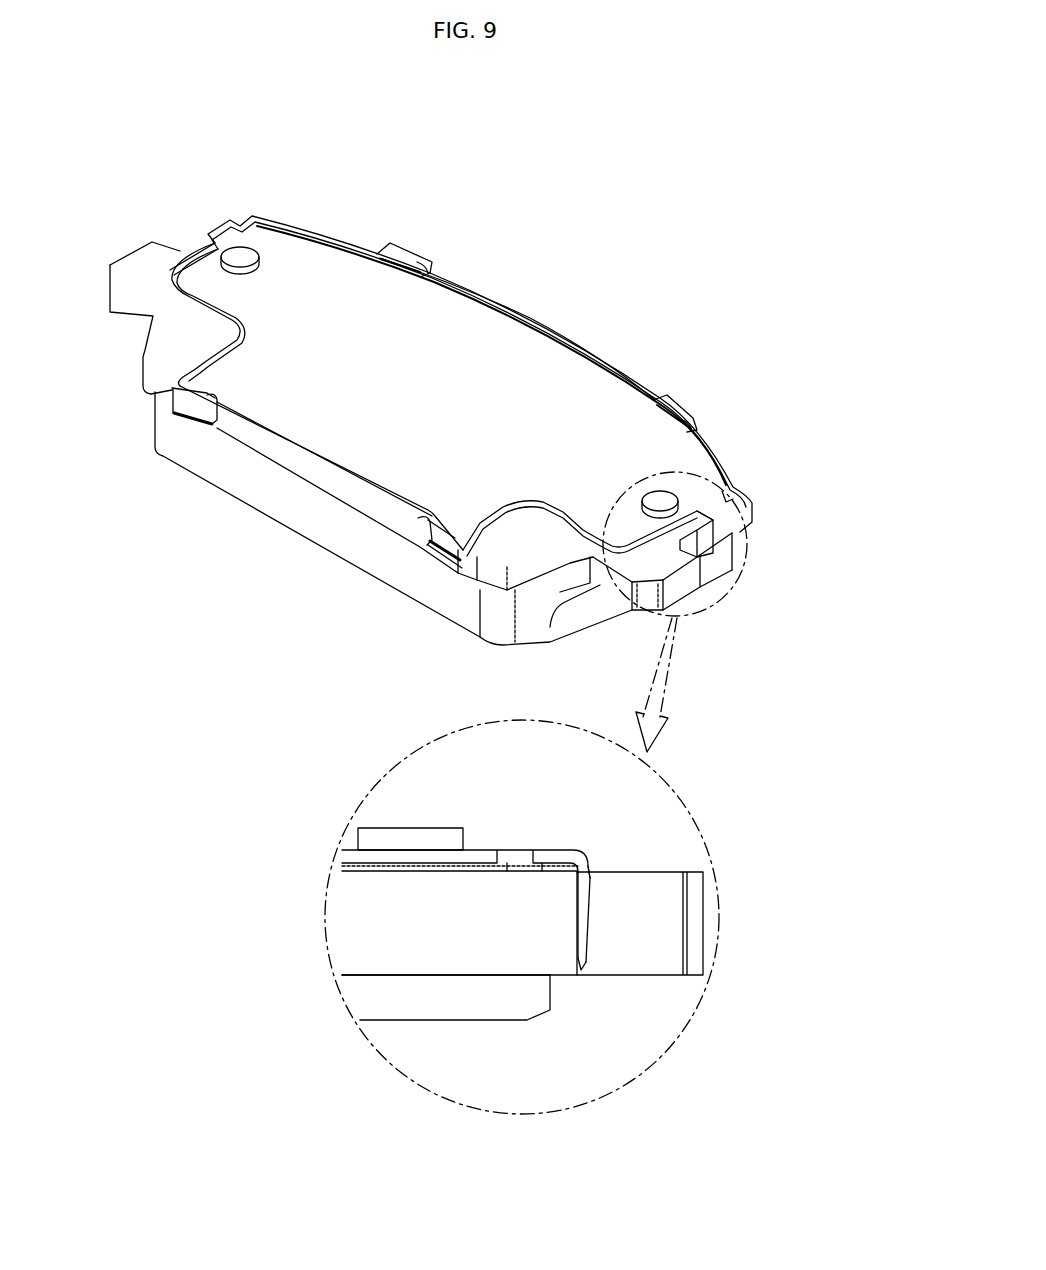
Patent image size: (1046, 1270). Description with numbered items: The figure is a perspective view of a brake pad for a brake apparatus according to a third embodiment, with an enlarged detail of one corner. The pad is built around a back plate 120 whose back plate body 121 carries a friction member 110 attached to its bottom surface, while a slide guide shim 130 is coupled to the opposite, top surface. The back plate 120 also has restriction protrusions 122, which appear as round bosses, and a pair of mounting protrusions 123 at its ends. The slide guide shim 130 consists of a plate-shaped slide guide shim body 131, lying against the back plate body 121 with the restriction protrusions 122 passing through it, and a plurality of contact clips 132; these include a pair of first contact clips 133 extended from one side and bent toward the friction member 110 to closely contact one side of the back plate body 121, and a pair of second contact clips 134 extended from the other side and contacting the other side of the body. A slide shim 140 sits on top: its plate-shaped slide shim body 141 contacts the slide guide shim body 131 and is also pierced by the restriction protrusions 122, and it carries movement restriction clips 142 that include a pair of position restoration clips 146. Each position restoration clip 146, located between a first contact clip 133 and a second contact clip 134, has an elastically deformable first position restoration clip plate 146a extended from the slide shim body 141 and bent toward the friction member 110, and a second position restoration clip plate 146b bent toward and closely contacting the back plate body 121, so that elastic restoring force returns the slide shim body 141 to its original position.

The friction member 110 is at (270, 497).
The back plate 120 is at (242, 160).
The back plate body 121 is at (167, 345).
The restriction protrusions 122 is at (243, 255).
The mounting protrusions 123 is at (140, 260).
The slide guide shim 130 is at (712, 458).
The slide guide shim body 131 is at (422, 865).
The contact clips 132 is at (305, 326).
The first contact clips 133 is at (170, 407).
The second contact clips 134 is at (425, 263).
The slide shim 140 is at (506, 340).
The slide shim body 141 is at (590, 395).
The movement restriction clips 142 is at (725, 740).
The position restoration clips 146 is at (735, 525).
The first position restoration clip plate 146a is at (590, 898).
The second position restoration clip plate 146b is at (583, 963).